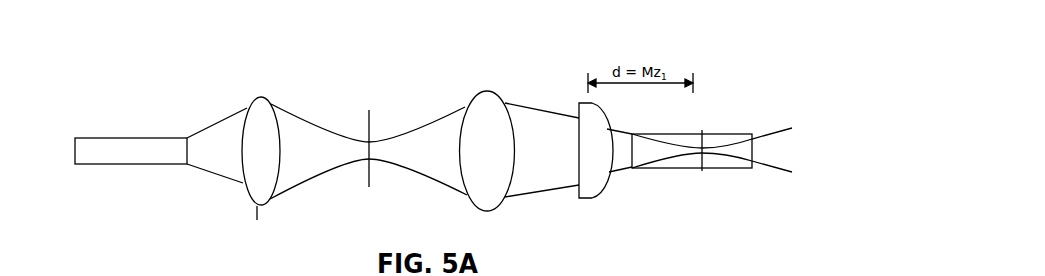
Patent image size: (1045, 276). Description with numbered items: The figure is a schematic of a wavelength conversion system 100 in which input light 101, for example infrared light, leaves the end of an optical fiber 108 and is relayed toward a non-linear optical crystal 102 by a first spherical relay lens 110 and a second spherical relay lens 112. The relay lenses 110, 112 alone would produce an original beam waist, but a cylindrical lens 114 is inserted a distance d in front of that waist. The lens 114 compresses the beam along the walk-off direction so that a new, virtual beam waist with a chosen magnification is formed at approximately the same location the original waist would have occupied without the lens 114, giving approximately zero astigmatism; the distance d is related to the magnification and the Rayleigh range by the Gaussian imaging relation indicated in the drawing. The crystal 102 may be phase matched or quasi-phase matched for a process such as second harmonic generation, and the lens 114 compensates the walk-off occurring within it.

The system 100 is at (732, 84).
The input light 101 is at (213, 125).
The non-linear optical crystal 102 is at (713, 170).
The optical fiber 108 is at (142, 155).
The first spherical relay lens 110 is at (266, 103).
The second spherical relay lens 112 is at (497, 102).
The lens 114 is at (600, 180).